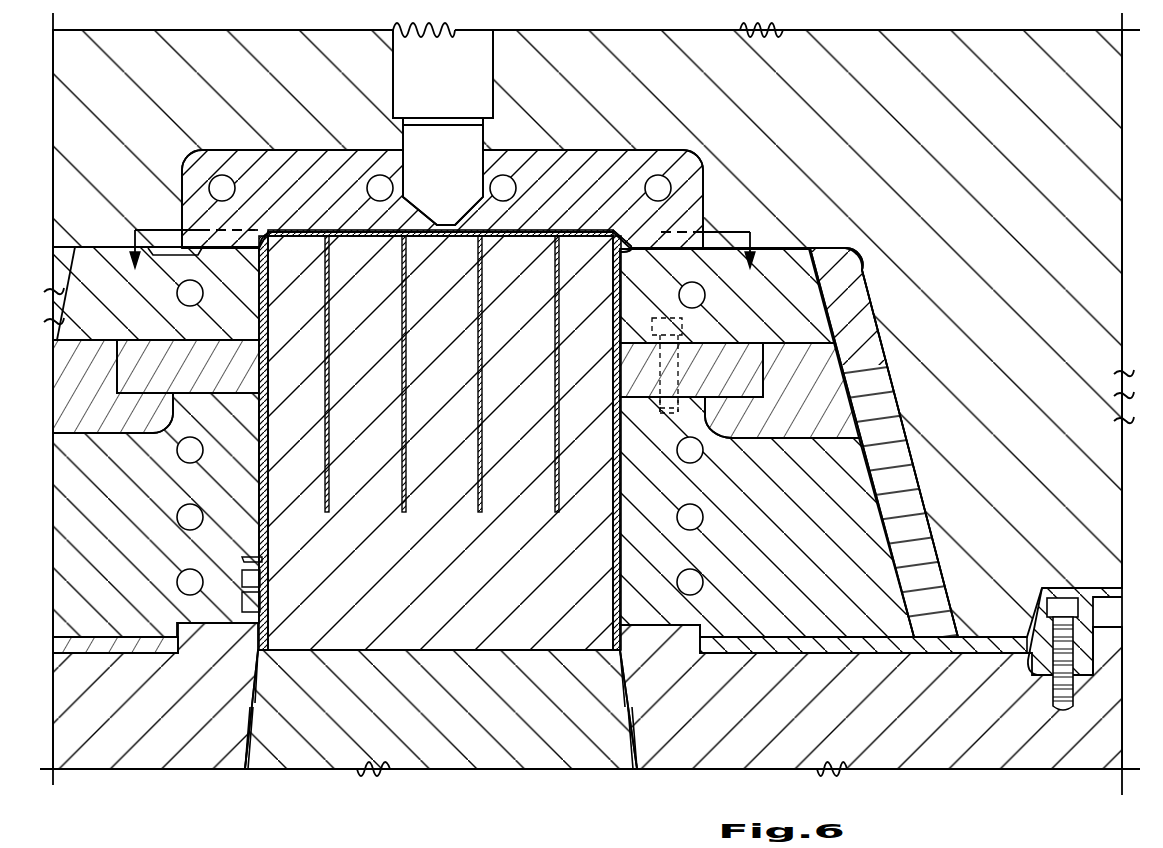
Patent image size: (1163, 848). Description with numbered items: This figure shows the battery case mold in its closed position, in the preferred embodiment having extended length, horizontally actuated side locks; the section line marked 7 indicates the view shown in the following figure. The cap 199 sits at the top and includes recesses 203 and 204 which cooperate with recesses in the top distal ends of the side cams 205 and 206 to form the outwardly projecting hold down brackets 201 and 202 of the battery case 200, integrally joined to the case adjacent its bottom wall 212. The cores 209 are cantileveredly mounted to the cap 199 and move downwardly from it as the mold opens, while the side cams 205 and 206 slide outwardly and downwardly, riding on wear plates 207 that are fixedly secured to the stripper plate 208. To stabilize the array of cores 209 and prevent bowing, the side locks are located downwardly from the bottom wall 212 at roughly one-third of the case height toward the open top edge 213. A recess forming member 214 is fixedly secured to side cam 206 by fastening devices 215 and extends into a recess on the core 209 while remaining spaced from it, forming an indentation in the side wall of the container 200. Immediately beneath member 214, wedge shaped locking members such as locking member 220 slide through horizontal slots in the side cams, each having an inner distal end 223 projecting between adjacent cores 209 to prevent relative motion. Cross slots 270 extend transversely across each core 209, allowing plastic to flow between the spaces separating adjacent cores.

The cap 199 is at (340, 151).
The battery case 200 is at (258, 509).
The hold down bracket 201 is at (256, 251).
The hold down bracket 202 is at (633, 244).
The recess 203 is at (265, 230).
The recess 204 is at (628, 235).
The side cam 205 is at (102, 555).
The side cam 206 is at (765, 535).
The wear plate 207 is at (832, 655).
The stripper plate 208 is at (786, 733).
The core 209 is at (418, 625).
The bottom wall 212 is at (542, 230).
The open top edge 213 is at (567, 650).
The recess forming member 214 is at (794, 258).
The fastening devices 215 is at (688, 333).
The locking member 220 is at (655, 388).
The inner distal end 223 is at (606, 392).
The cross slots 270 is at (329, 513).
The section line 7- 7 is at (443, 262).